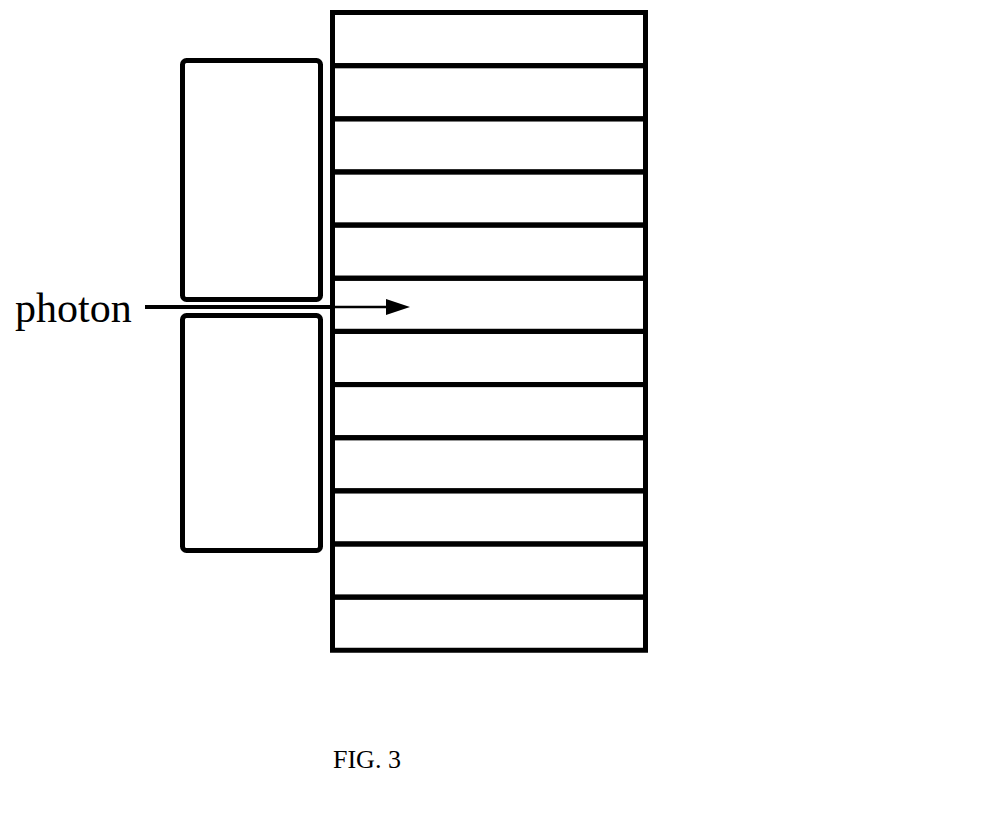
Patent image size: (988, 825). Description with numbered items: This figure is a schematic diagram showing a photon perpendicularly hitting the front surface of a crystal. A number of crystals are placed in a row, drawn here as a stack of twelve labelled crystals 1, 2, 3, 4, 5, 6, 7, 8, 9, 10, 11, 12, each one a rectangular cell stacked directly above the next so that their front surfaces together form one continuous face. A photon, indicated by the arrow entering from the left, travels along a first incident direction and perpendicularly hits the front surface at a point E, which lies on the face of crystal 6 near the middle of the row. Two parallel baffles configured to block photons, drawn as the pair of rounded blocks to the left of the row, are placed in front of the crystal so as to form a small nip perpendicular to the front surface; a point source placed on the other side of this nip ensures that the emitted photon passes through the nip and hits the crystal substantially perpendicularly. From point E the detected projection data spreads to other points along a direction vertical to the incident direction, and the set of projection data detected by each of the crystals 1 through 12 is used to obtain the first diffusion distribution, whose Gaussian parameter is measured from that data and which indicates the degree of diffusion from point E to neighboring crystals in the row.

The crystal 1 is at (489, 39).
The crystal 2 is at (489, 92).
The crystal 3 is at (489, 145).
The crystal 4 is at (489, 198).
The crystal 5 is at (489, 251).
The crystal 6 is at (489, 304).
The crystal 7 is at (489, 357).
The crystal 8 is at (489, 411).
The crystal 9 is at (489, 464).
The crystal 10 is at (489, 517).
The crystal 11 is at (489, 570).
The crystal 12 is at (489, 623).
The point E is at (322, 297).